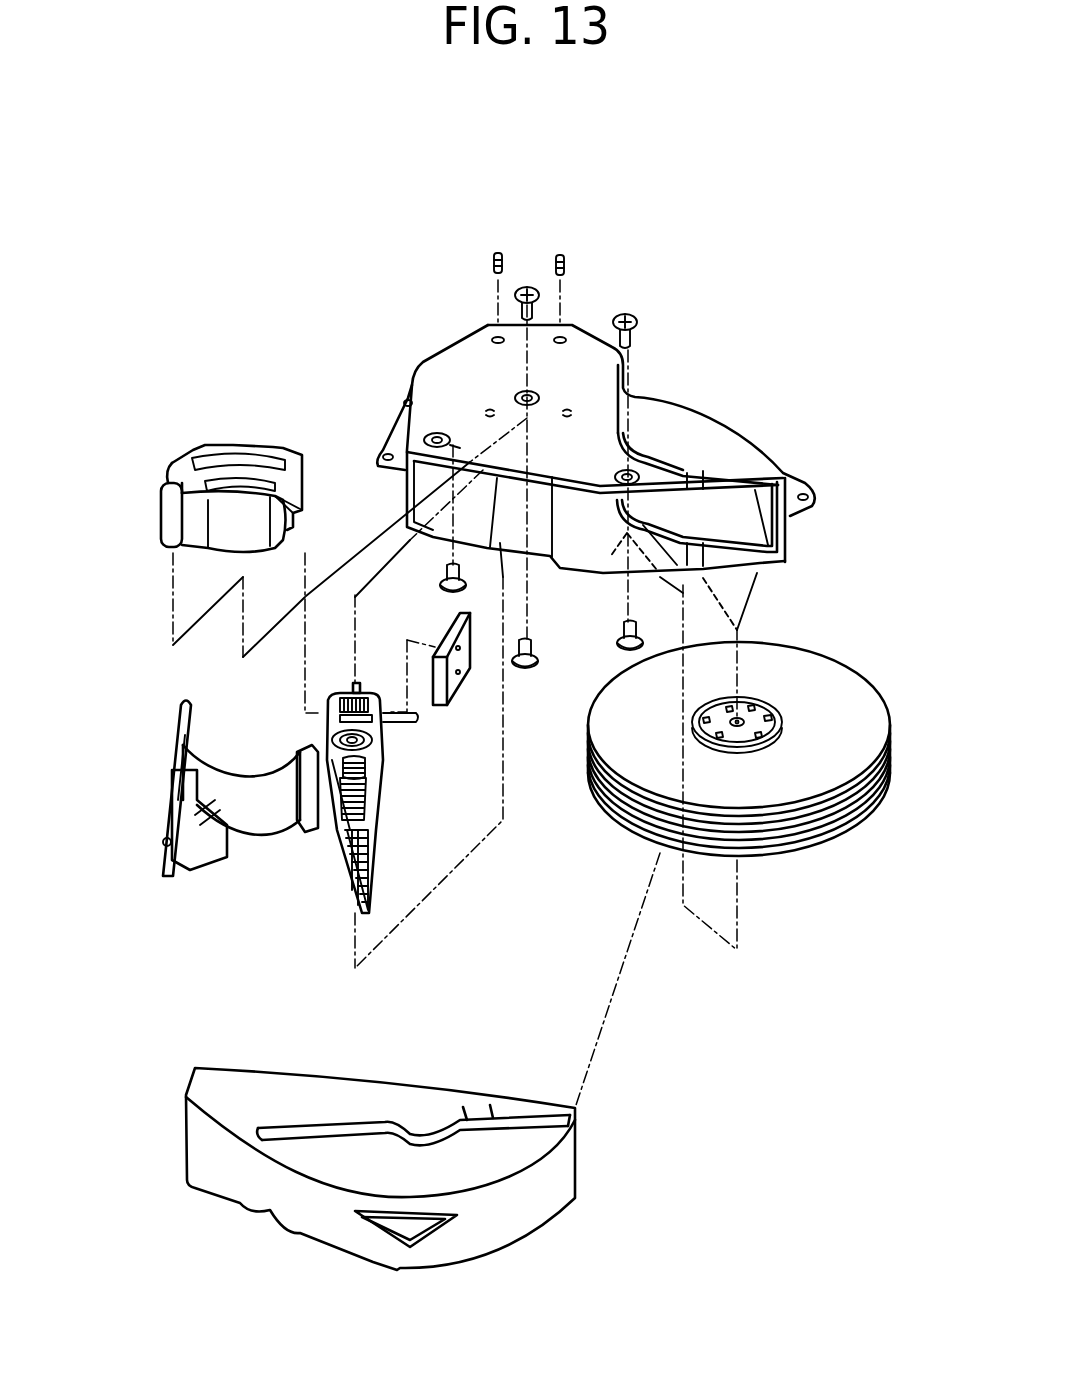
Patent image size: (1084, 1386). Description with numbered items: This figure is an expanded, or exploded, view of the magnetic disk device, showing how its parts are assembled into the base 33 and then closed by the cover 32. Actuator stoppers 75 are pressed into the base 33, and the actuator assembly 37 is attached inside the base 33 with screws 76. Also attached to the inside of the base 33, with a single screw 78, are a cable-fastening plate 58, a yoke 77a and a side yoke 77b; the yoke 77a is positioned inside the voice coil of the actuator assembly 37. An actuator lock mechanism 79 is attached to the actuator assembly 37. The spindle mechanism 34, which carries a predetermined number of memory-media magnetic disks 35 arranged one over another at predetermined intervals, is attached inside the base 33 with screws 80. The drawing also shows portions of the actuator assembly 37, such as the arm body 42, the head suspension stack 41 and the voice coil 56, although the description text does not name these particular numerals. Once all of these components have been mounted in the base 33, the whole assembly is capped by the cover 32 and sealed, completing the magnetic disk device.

The cover 32 is at (243, 1190).
The base 33 is at (705, 408).
The spindle mechanism 34 is at (745, 700).
The magnetic disks 35 is at (632, 835).
The actuator assembly 37 is at (342, 798).
The head suspension stack 41 is at (377, 850).
The arm body 42 is at (388, 793).
The voice coil 56 is at (250, 815).
The cable-fastening plate 58 is at (183, 735).
The actuator stoppers 75 is at (492, 263).
The screws 76 is at (527, 283).
The yoke 77a is at (195, 450).
The side yoke 77b is at (460, 693).
The screw 78 is at (440, 588).
The actuator lock mechanism 79 is at (405, 735).
The screws 80 is at (638, 322).